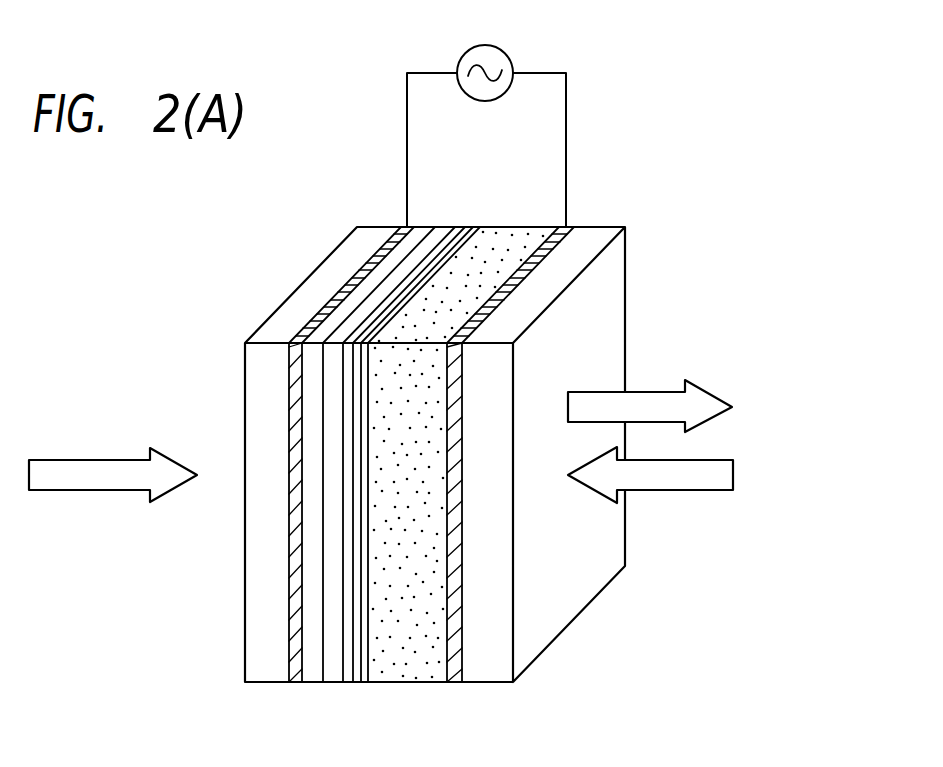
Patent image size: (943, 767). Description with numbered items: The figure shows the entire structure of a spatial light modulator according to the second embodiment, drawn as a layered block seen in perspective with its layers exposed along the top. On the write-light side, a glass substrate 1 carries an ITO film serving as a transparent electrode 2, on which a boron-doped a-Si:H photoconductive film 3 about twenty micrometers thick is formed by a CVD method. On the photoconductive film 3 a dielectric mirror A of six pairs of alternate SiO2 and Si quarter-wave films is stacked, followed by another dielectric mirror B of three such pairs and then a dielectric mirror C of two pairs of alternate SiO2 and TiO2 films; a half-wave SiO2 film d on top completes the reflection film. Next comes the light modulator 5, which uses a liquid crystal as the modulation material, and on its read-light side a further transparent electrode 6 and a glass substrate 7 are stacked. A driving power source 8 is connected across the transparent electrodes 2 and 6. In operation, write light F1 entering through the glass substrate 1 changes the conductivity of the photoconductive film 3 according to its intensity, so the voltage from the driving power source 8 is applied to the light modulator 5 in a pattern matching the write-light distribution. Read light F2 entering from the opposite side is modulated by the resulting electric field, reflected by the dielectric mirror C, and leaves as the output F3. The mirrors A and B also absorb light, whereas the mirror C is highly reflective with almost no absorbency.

The glass substrate 1 is at (365, 231).
The transparent electrode 2 is at (392, 231).
The photoconductive film 3 is at (415, 231).
The dielectric mirror A is at (445, 231).
The dielectric mirror B is at (462, 231).
The dielectric mirror C is at (476, 231).
The SiO2 film d is at (464, 233).
The light modulator 5 is at (530, 231).
The transparent electrode 6 is at (556, 243).
The glass substrate 7 is at (630, 280).
The driving power source 8 is at (504, 50).
The write light F1 is at (101, 460).
The read light F2 is at (682, 491).
The modulated read light output F3 is at (655, 391).